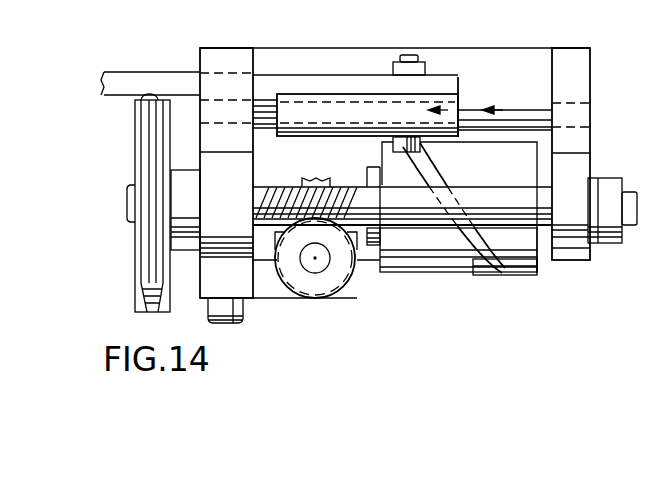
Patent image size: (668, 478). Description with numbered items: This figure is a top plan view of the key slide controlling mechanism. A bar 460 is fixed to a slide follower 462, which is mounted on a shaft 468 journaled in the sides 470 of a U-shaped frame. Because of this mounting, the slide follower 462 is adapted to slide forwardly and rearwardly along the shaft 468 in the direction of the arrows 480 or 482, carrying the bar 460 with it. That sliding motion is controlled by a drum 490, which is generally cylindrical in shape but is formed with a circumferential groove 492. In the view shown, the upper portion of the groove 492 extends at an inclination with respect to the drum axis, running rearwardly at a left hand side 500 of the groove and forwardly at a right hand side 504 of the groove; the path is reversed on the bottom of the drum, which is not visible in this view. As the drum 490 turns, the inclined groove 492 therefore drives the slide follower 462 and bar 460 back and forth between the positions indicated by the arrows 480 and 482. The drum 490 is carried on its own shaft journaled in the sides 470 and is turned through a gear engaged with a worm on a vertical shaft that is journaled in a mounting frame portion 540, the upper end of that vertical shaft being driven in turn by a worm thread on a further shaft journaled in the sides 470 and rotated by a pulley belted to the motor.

The bar 460 is at (158, 75).
The sides of the U-shaped frame 470 is at (227, 52).
The shaft 468 is at (545, 115).
The slide follower 462 is at (462, 102).
The arrow 480 is at (445, 112).
The arrow 482 is at (486, 114).
The left hand side of the groove 500 is at (393, 141).
The drum 490 is at (417, 262).
The circumferential groove 492 is at (485, 253).
The right hand side of the groove 504 is at (517, 275).
The mounting frame portion 540 is at (270, 290).